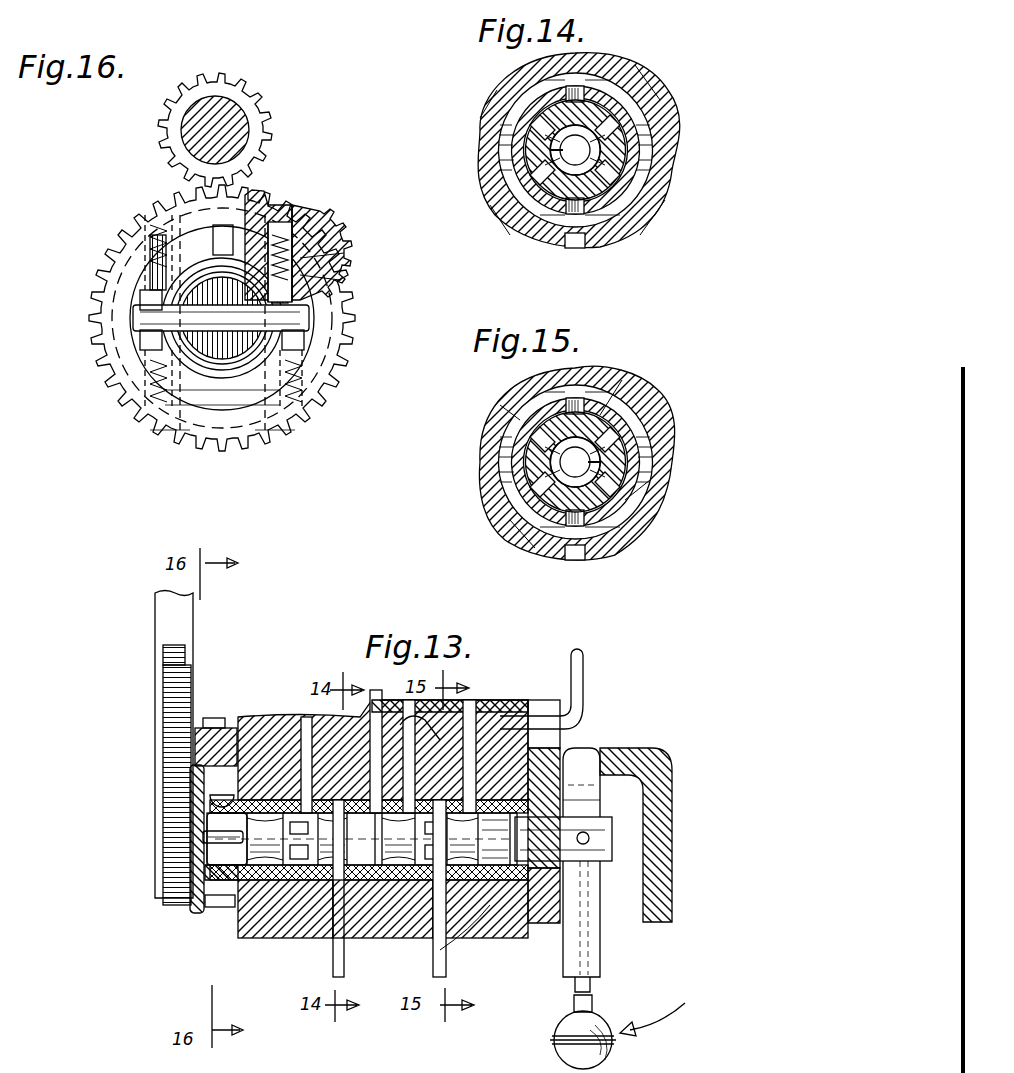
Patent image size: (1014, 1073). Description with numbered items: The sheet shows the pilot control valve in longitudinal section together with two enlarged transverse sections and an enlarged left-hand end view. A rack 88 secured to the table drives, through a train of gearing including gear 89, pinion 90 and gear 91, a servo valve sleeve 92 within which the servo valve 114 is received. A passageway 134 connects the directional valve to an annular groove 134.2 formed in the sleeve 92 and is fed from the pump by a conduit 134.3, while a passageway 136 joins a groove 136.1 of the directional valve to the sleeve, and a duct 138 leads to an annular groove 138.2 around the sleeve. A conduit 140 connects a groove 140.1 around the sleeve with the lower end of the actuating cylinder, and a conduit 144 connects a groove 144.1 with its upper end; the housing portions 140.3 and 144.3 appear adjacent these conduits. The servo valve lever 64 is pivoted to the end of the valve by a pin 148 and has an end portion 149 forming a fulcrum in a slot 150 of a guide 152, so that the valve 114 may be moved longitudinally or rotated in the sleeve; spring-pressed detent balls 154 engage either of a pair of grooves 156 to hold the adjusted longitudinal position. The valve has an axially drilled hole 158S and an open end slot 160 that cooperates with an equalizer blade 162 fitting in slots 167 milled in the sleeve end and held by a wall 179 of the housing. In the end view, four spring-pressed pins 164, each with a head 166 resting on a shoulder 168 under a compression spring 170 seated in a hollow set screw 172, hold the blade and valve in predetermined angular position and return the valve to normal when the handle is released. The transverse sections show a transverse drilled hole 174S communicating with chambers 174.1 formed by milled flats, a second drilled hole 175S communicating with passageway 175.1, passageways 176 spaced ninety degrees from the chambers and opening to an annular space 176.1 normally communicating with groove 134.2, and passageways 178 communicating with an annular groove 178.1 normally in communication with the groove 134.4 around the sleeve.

In FIG. 13, the servo valve lever 64 is at (600, 1010).
In FIG. 13, the rack 88 is at (190, 645).
In FIG. 13, the gear 89 is at (180, 705).
In FIG. 16, the pinion 90 is at (185, 140).
In FIG. 13, the pinion 90 is at (228, 732).
In FIG. 16, the gear 91 is at (355, 385).
In FIG. 13, the gear 91 is at (222, 910).
In FIG. 16, the servo valve sleeve 92 is at (300, 345).
In FIG. 14, the servo valve sleeve 92 is at (600, 132).
In FIG. 15, the servo valve sleeve 92 is at (610, 475).
In FIG. 13, the servo valve sleeve 92 is at (262, 900).
In FIG. 16, the servo valve 114 is at (240, 345).
In FIG. 14, the servo valve 114 is at (590, 150).
In FIG. 15, the servo valve 114 is at (615, 445).
In FIG. 13, the servo valve 114 is at (575, 800).
In FIG. 13, the passageway 134 is at (381, 743).
In FIG. 13, the annular groove 134.2 is at (320, 800).
In FIG. 13, the conduit 134.3 is at (540, 682).
In FIG. 13, the groove 134.4 is at (519, 784).
In FIG. 13, the passageway 136 is at (440, 705).
In FIG. 13, the groove 136.1 is at (437, 736).
In FIG. 13, the duct 138 is at (300, 790).
In FIG. 13, the annular groove 138.2 is at (369, 827).
In FIG. 14, the conduit 140 is at (575, 248).
In FIG. 13, the conduit 140 is at (333, 960).
In FIG. 14, the groove 140.1 is at (635, 205).
In FIG. 13, the groove 140.1 is at (343, 868).
In FIG. 14, the housing rib 140.3 is at (615, 80).
In FIG. 13, the housing rib 140.3 is at (285, 915).
In FIG. 15, the conduit 144 is at (575, 560).
In FIG. 13, the conduit 144 is at (433, 965).
In FIG. 15, the groove 144.1 is at (540, 552).
In FIG. 13, the groove 144.1 is at (470, 875).
In FIG. 15, the housing rib 144.3 is at (620, 380).
In FIG. 13, the housing rib 144.3 is at (450, 960).
In FIG. 13, the pin 148 is at (590, 838).
In FIG. 13, the end portion 149 is at (580, 745).
In FIG. 13, the slot 150 is at (590, 745).
In FIG. 13, the guide 152 is at (670, 778).
In FIG. 13, the spring-pressed detent balls 154 is at (563, 837).
In FIG. 13, the grooves 156 is at (520, 905).
In FIG. 14, the axially drilled hole 158S is at (550, 152).
In FIG. 15, the axially drilled hole 158S is at (600, 465).
In FIG. 13, the axially drilled hole 158S is at (320, 870).
In FIG. 16, the open end slot 160 is at (222, 348).
In FIG. 13, the open end slot 160 is at (210, 900).
In FIG. 16, the equalizer blade 162 is at (140, 318).
In FIG. 13, the equalizer blade 162 is at (203, 836).
In FIG. 16, the spring-pressed pins 164 is at (348, 275).
In FIG. 16, the head 166 is at (338, 230).
In FIG. 16, the slots 167 is at (145, 335).
In FIG. 16, the shoulder 168 is at (350, 250).
In FIG. 16, the compression spring 170 is at (300, 215).
In FIG. 16, the hollow set screw 172 is at (292, 210).
In FIG. 14, the chambers 174.1 is at (540, 120).
In FIG. 14, the transverse drilled hole 174S is at (612, 170).
In FIG. 13, the transverse drilled hole 174S is at (362, 839).
In FIG. 15, the passageway 175.1 is at (630, 400).
In FIG. 15, the second drilled hole 175S is at (540, 478).
In FIG. 13, the second drilled hole 175S is at (430, 800).
In FIG. 14, the passageways 176 is at (615, 105).
In FIG. 13, the passageways 176 is at (285, 845).
In FIG. 13, the annular space 176.1 is at (383, 909).
In FIG. 15, the passageways 178 is at (525, 430).
In FIG. 13, the passageways 178 is at (390, 942).
In FIG. 13, the annular groove 178.1 is at (470, 955).
In FIG. 13, the wall 179 is at (195, 835).